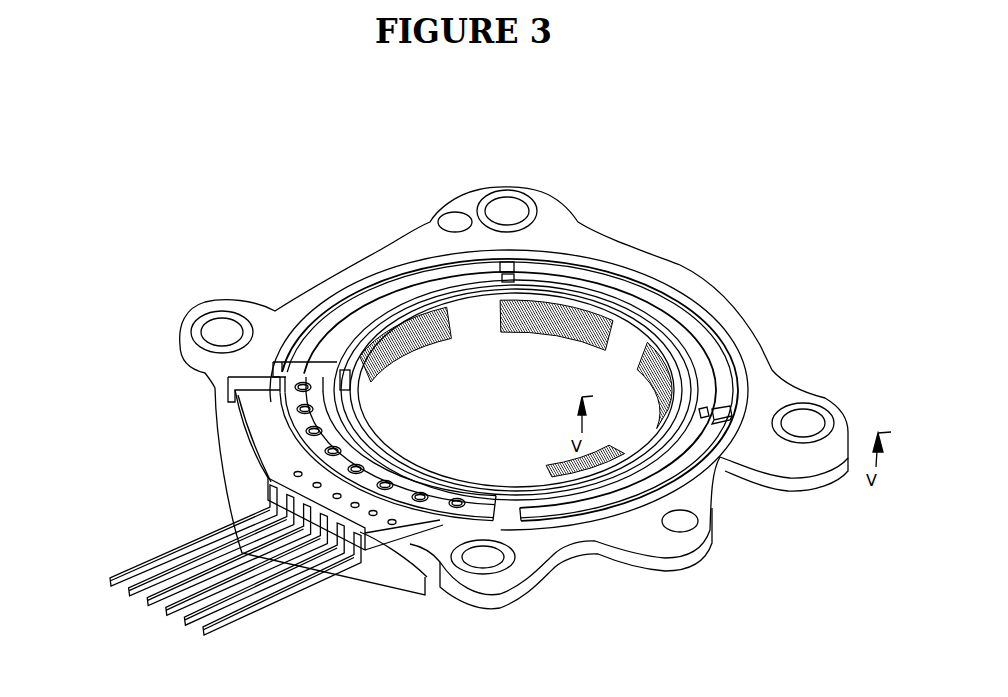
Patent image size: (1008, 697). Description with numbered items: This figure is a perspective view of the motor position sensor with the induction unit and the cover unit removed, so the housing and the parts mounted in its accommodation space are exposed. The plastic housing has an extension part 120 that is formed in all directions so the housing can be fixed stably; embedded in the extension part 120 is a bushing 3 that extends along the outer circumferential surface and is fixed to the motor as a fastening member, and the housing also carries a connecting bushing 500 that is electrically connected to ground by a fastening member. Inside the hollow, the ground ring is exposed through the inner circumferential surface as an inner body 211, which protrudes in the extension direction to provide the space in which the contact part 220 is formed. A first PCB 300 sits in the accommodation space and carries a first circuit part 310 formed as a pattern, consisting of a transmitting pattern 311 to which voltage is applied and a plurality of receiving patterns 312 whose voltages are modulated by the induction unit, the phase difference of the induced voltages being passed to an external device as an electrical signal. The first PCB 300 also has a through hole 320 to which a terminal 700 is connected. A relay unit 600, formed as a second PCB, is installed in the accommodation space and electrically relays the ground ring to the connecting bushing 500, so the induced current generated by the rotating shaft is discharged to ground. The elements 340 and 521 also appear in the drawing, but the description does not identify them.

The bushing 3 is at (213, 315).
The extension part 120 is at (768, 468).
The inner body 211 is at (647, 330).
The contact part 220 is at (577, 297).
The first PCB 300 is at (267, 463).
The first circuit part 310 is at (290, 463).
The transmitting pattern 311 is at (300, 430).
The receiving patterns 312 is at (300, 403).
The through hole 320 is at (298, 474).
The sensor 340 is at (723, 407).
The connecting bushing 500 is at (527, 213).
The sensor element 521 is at (703, 407).
The relay unit 600 is at (603, 496).
The terminal 700 is at (230, 598).